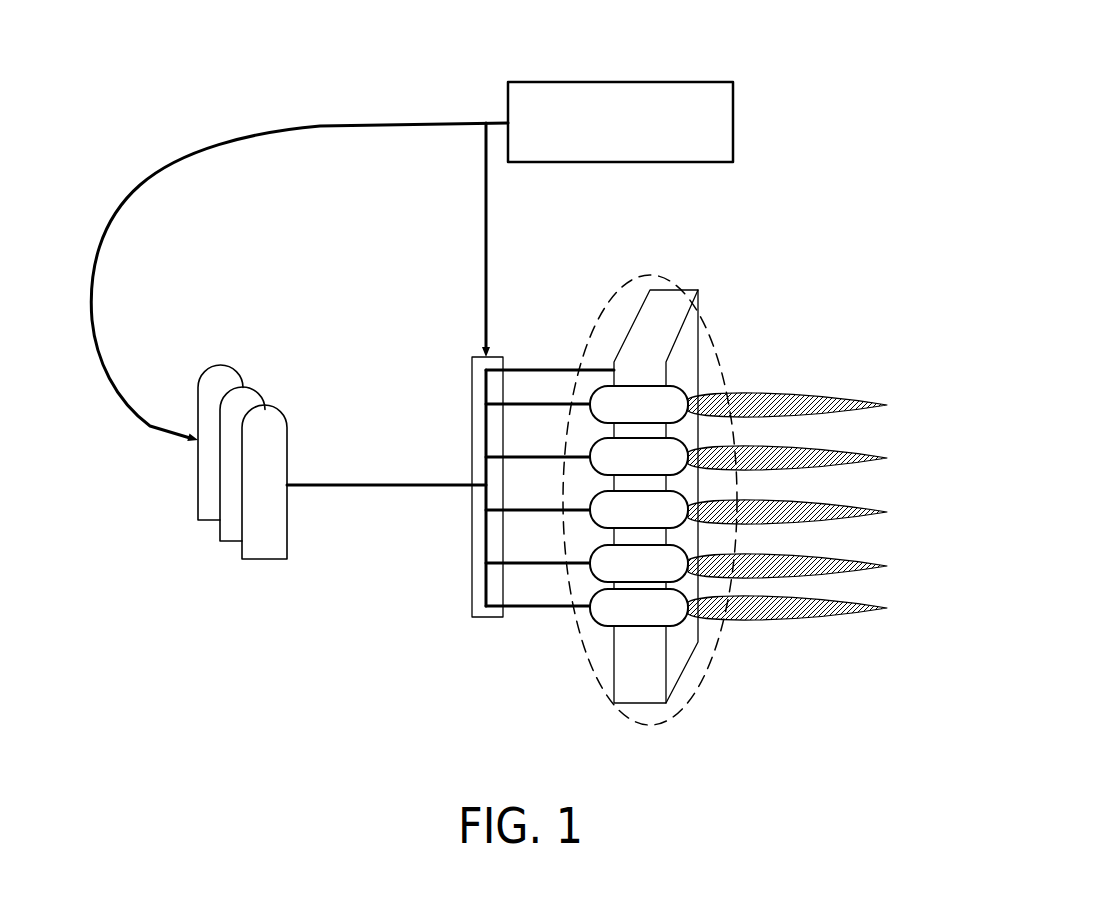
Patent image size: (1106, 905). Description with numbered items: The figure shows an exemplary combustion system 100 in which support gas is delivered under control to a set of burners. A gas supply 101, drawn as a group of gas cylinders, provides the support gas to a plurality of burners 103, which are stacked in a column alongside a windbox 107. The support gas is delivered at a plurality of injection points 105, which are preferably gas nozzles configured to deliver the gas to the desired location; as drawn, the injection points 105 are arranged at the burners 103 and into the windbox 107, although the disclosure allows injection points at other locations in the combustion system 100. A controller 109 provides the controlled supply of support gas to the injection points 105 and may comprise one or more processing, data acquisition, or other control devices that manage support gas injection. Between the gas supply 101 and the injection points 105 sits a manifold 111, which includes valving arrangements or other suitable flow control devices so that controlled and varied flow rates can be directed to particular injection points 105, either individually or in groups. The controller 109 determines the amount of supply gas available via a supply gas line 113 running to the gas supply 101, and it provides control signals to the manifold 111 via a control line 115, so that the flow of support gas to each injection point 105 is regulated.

The combustion system 100 is at (943, 138).
The gas supply 101 is at (255, 389).
The burners 103 is at (627, 626).
The injection points 105 is at (590, 404).
The windbox 107 is at (602, 664).
The controller 109 is at (668, 108).
The manifold 111 is at (472, 407).
The supply gas line 113 is at (315, 125).
The control line 115 is at (486, 211).